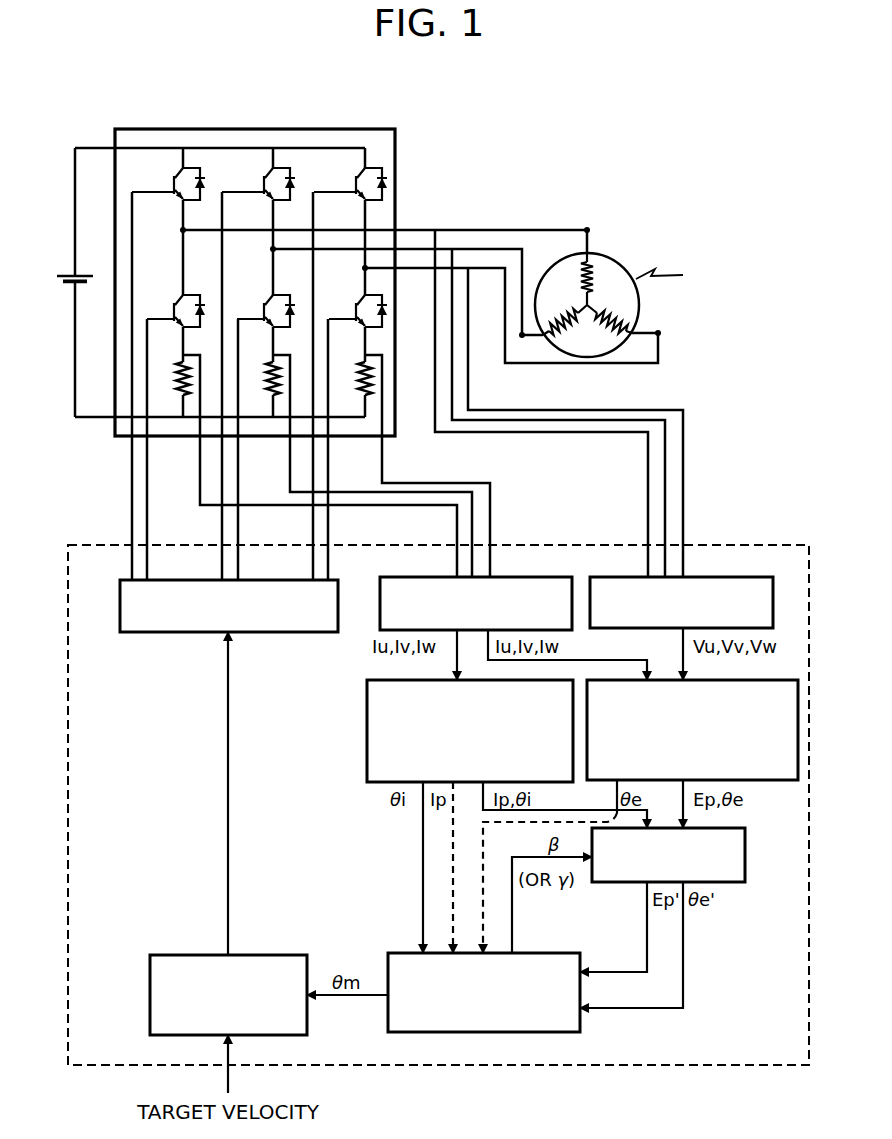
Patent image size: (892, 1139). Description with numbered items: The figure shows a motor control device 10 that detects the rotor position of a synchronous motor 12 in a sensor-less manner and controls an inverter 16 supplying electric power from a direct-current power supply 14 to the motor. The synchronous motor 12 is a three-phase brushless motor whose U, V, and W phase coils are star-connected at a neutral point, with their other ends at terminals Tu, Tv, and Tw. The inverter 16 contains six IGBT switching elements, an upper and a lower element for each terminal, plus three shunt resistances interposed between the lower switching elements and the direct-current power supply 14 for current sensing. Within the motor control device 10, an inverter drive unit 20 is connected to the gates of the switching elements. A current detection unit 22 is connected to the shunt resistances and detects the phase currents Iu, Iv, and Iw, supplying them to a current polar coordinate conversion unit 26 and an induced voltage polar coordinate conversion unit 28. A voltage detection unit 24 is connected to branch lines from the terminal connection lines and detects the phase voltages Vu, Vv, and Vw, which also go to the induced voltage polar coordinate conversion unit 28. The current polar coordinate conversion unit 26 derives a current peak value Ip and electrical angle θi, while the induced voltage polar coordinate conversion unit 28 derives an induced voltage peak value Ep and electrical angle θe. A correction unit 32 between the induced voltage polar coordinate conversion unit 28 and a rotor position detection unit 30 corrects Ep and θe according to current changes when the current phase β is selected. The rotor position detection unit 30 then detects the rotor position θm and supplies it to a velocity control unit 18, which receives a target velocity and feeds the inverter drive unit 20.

The motor control device 10 is at (705, 545).
The synchronous motor 12 is at (613, 253).
The direct-current power supply 14 is at (72, 273).
The inverter 16 is at (323, 129).
The velocity control unit 18 is at (262, 955).
The inverter drive unit 20 is at (338, 605).
The current detection unit 22 is at (532, 577).
The voltage detection unit 24 is at (773, 605).
The current polar coordinate conversion unit 26 is at (367, 735).
The induced voltage polar coordinate conversion unit 28 is at (775, 780).
The rotor position detection unit 30 is at (545, 953).
The correction unit 32 is at (745, 855).